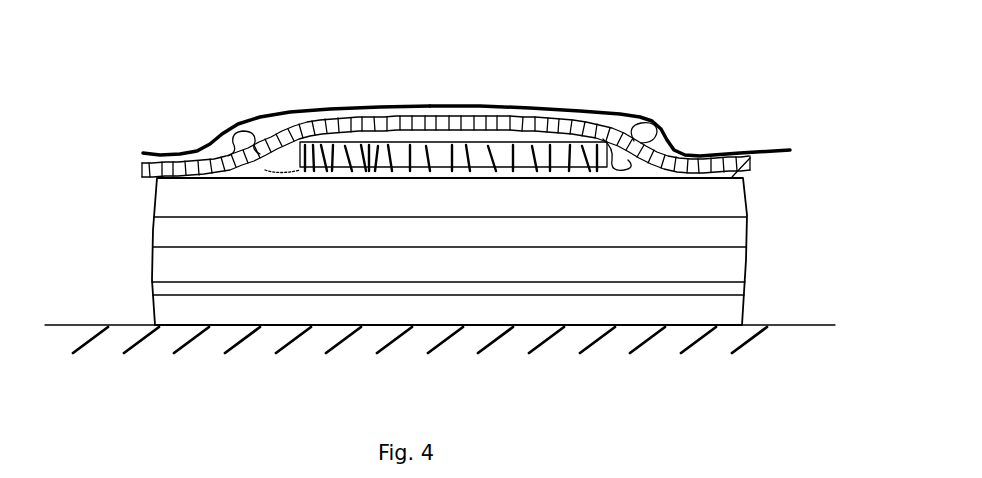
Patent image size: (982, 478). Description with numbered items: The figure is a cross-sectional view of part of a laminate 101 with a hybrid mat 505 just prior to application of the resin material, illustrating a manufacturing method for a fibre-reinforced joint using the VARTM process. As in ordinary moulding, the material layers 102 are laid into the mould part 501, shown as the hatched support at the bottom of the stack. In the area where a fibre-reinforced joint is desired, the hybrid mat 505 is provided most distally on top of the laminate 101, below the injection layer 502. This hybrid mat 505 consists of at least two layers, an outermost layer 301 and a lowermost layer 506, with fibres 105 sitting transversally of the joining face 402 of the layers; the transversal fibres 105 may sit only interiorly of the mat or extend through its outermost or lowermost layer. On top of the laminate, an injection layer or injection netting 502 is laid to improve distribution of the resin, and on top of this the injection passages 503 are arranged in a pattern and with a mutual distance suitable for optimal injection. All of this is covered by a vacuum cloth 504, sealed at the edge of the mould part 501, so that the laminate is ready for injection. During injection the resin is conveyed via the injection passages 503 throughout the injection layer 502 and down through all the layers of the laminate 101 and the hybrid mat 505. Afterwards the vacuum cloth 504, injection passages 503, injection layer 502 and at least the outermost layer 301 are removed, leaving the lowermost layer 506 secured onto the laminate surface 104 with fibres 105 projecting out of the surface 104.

The laminate 101 is at (120, 182).
The material layers 102 is at (727, 200).
The laminate surface 104 is at (747, 160).
The fibres 105 is at (527, 147).
The outermost layer 301 is at (338, 147).
The joining face 402 is at (477, 157).
The mould part 501 is at (163, 345).
The injection layer 502 is at (147, 160).
The injection passages 503 is at (220, 135).
The vacuum cloth 504 is at (265, 116).
The hybrid mat 505 is at (637, 145).
The lowermost layer 506 is at (620, 162).